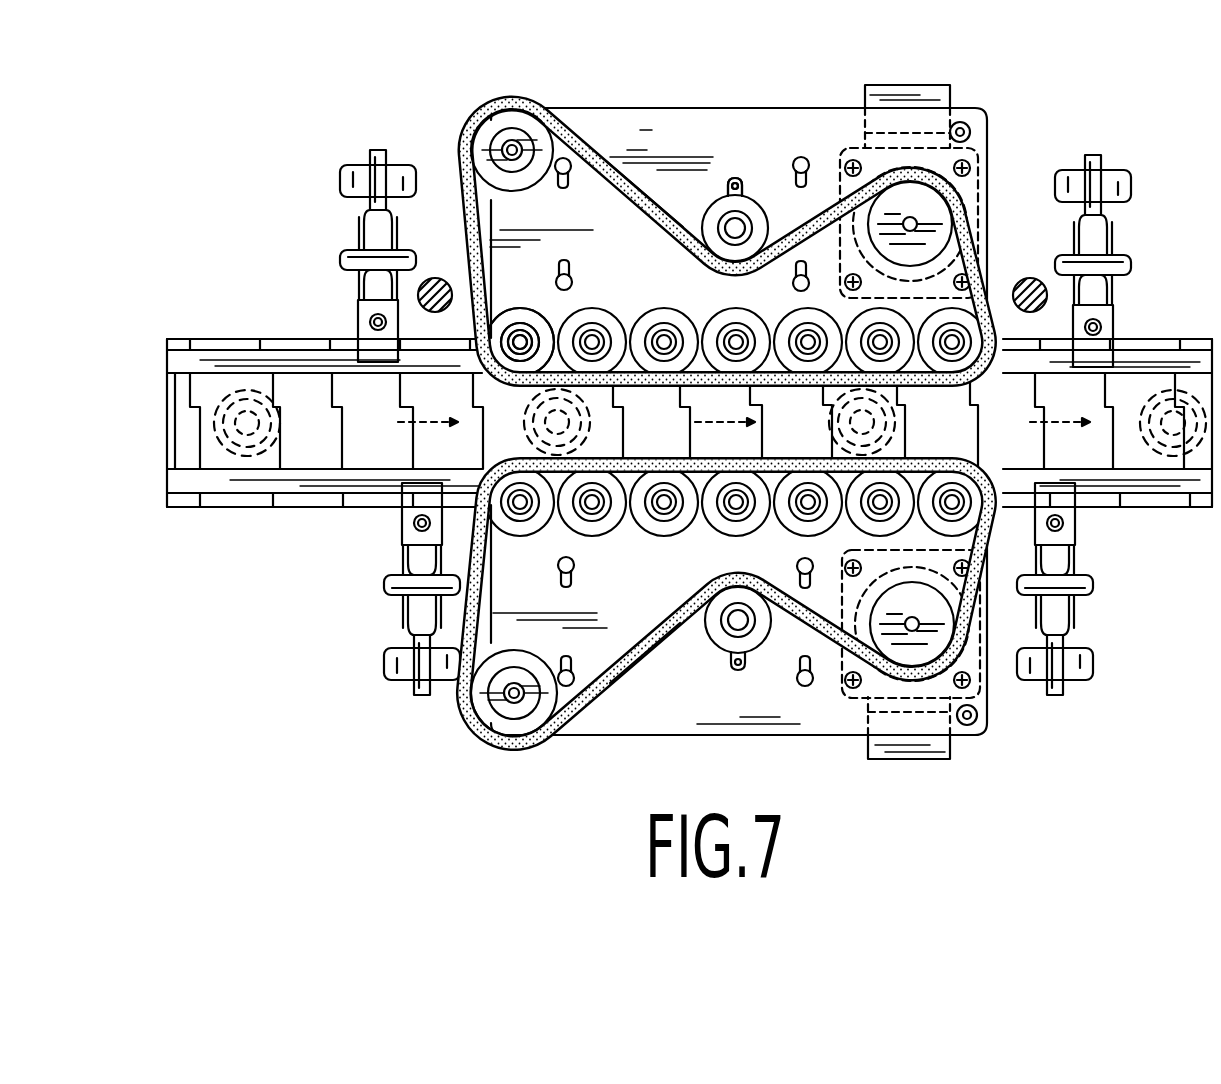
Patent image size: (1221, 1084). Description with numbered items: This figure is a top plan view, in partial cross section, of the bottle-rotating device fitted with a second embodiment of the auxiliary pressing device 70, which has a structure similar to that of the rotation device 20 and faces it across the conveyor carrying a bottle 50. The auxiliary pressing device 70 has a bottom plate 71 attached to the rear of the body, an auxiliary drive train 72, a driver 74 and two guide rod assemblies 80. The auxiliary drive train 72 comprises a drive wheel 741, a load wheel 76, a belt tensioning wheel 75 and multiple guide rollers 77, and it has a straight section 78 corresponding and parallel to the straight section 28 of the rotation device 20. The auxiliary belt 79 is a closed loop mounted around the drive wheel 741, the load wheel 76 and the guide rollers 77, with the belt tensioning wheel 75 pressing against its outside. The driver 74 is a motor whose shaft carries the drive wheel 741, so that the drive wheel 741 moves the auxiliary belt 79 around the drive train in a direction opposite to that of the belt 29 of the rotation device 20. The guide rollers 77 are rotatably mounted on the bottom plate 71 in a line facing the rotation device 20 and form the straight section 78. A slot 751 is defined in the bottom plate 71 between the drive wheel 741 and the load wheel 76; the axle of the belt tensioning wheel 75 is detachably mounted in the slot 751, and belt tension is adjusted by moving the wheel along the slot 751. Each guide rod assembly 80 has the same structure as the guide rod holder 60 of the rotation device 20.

The rotation device 20 is at (743, 587).
The straight section 28 is at (937, 452).
The belt 29 is at (682, 676).
The bottle 50 is at (243, 372).
The guide rod holder 60 is at (374, 612).
The auxiliary pressing device 70 is at (724, 253).
The bottom plate 71 is at (633, 135).
The auxiliary drive train 72 is at (445, 172).
The driver 74 is at (962, 214).
The drive wheel 741 is at (930, 202).
The belt tensioning wheel 75 is at (718, 252).
The slot 751 is at (739, 182).
The load wheel 76 is at (505, 118).
The guide rollers 77 is at (507, 324).
The straight section 78 is at (622, 390).
The auxiliary belt 79 is at (645, 205).
The guide rod assemblies 80 is at (328, 232).